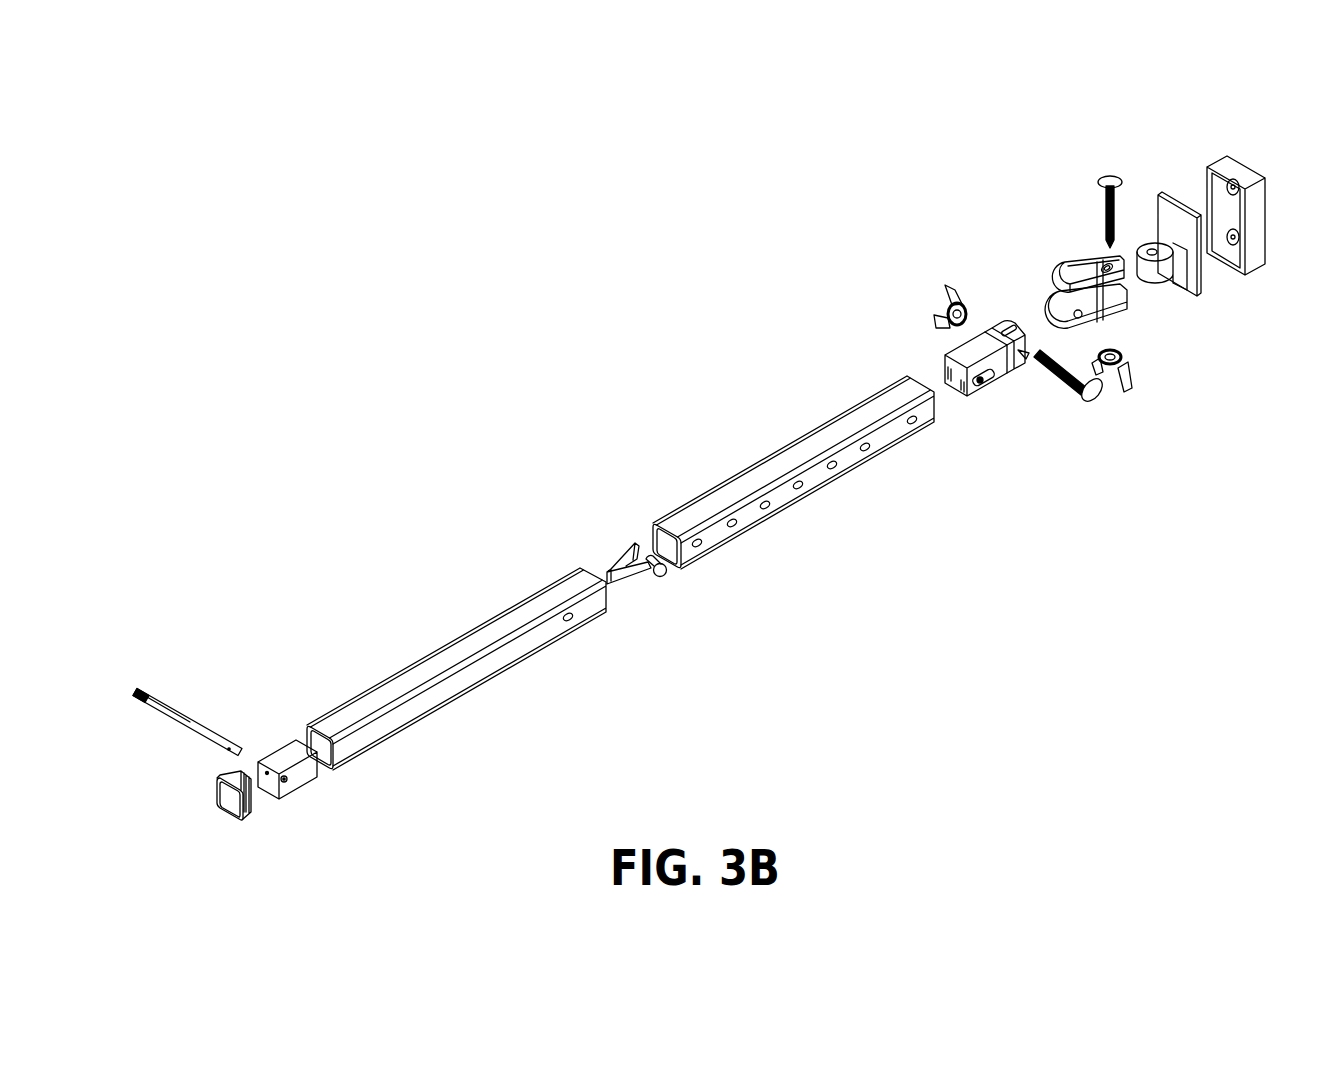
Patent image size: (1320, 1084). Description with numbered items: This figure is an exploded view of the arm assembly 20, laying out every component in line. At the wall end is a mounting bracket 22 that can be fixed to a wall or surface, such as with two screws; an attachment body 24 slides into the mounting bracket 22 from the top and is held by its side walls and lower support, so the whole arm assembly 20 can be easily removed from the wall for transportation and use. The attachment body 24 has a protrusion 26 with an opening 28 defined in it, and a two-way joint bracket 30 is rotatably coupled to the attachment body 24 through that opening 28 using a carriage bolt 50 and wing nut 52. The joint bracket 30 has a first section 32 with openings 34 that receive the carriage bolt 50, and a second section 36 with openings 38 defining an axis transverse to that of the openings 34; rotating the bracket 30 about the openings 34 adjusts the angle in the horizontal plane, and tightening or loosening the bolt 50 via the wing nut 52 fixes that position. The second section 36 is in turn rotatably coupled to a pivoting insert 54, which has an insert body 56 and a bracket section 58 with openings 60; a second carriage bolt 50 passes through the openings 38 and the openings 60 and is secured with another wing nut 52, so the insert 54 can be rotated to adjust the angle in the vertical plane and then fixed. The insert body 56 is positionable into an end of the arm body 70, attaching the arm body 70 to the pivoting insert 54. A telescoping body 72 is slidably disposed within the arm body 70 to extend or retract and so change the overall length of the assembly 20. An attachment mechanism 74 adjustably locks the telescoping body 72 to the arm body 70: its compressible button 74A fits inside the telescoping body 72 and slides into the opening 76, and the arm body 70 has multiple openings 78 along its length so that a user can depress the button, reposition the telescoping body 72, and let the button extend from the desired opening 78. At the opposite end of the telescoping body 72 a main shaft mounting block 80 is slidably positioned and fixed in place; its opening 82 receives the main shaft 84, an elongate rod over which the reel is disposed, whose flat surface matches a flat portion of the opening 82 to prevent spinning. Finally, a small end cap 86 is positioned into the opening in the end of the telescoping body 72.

The arm assembly 20 is at (390, 490).
The mounting bracket 22 is at (1245, 170).
The attachment body 24 is at (1200, 266).
The protrusion 26 is at (1148, 275).
The opening 28 is at (1147, 232).
The 2-way joint bracket 30 is at (1186, 273).
The first section 32 is at (1102, 288).
The openings 34 is at (1105, 262).
The second section 36 is at (1062, 296).
The openings 38 is at (1094, 322).
The carriage bolt 50 is at (1110, 178).
The wing nut 52 is at (945, 290).
The pivoting insert 54 is at (970, 355).
The insert body 56 is at (946, 356).
The bracket section 58 is at (1007, 376).
The openings 60 is at (1036, 344).
The arm body 70 is at (823, 477).
The telescoping body 72 is at (505, 655).
The attachment mechanism 74 is at (622, 587).
The button 74A is at (668, 576).
The opening 76 is at (585, 632).
The openings 78 is at (786, 517).
The main shaft mounting block 80 is at (306, 776).
The opening 82 is at (294, 792).
The main shaft 84 is at (217, 727).
The end cap 86 is at (219, 808).